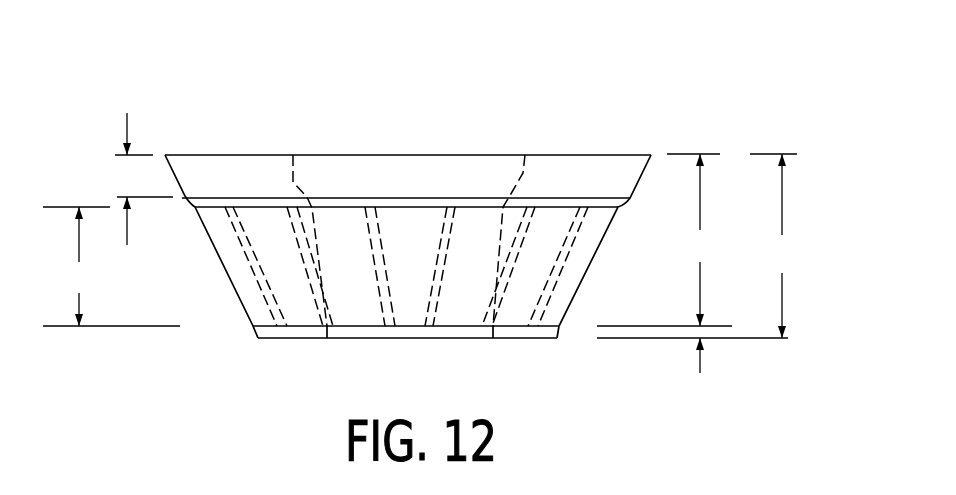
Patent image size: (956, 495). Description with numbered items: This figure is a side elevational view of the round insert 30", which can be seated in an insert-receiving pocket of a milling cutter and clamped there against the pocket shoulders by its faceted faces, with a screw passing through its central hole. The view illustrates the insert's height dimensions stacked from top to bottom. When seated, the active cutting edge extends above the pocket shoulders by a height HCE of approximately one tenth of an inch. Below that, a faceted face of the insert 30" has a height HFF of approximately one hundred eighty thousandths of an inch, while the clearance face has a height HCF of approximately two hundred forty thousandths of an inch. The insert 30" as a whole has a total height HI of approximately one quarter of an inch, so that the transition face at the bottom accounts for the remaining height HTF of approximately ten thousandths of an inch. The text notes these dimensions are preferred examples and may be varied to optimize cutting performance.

The round insert 30 is at (665, 104).
The cutting edge height HCE is at (139, 162).
The faceted face height HFF is at (111, 266).
The clearance face height HCF is at (664, 240).
The total insert height HI is at (768, 246).
The transition face height HTF is at (668, 374).